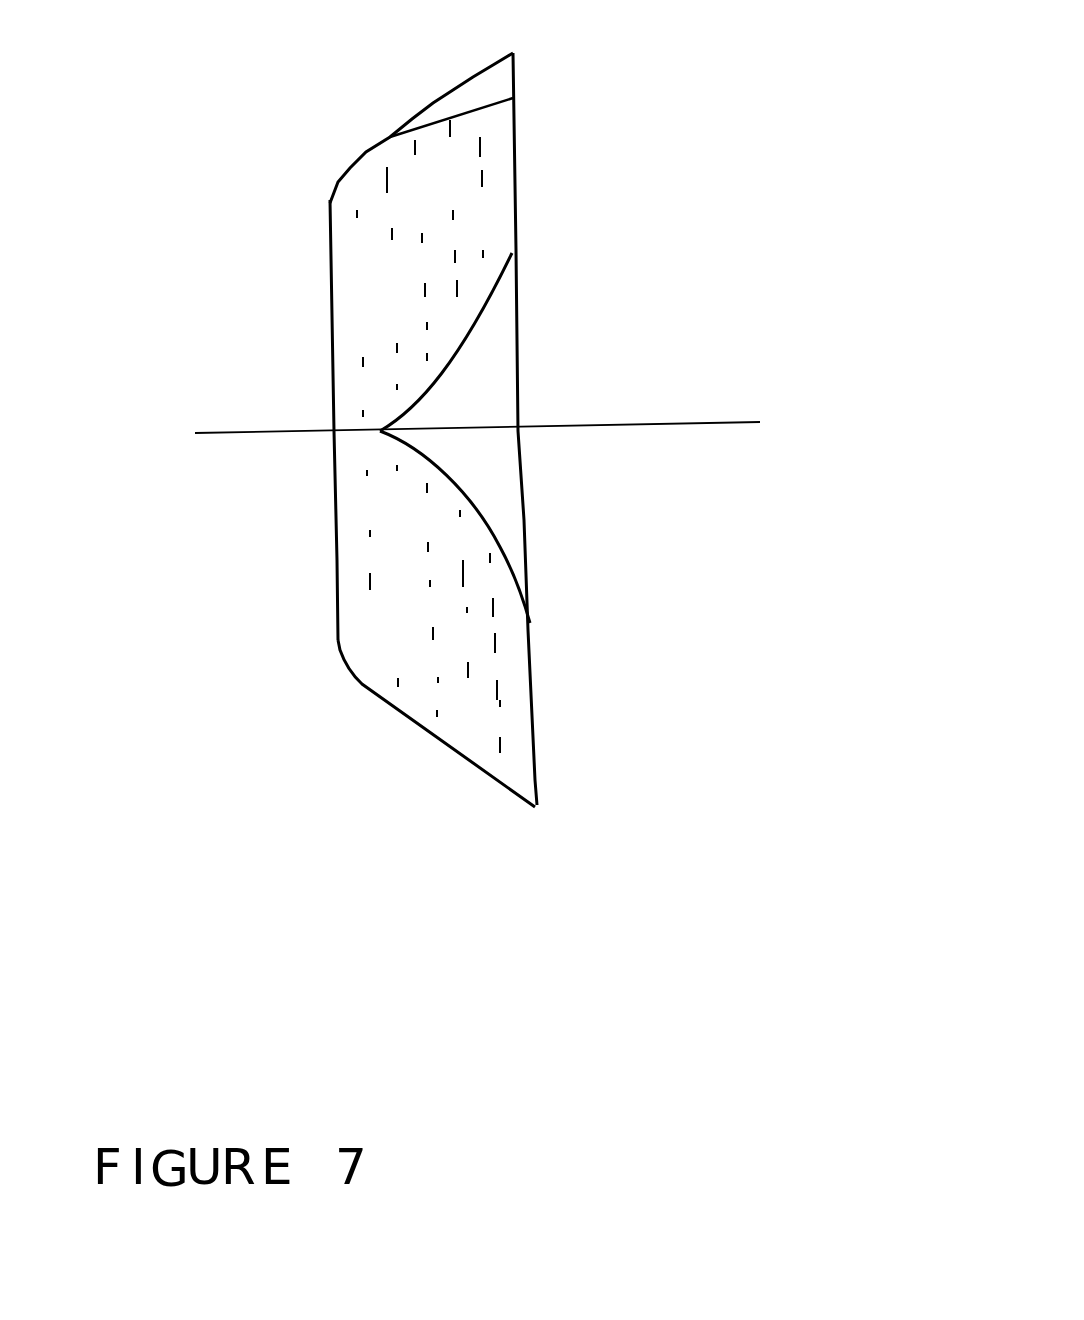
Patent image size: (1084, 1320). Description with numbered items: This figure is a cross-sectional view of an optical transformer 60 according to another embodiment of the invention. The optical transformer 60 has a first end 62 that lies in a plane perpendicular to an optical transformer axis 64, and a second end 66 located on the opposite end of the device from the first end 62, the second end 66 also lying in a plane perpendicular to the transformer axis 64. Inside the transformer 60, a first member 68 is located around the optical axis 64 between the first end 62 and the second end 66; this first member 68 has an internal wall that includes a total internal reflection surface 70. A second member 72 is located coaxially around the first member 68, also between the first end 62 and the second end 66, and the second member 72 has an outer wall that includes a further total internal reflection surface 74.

The optical transformer 60 is at (533, 853).
The first end 62 is at (238, 420).
The optical transformer axis 64 is at (524, 430).
The second end 66 is at (537, 673).
The first member 68 is at (572, 341).
The total internal reflection surface 70 is at (568, 527).
The second member 72 is at (534, 431).
The total internal reflection surface 74 is at (551, 74).